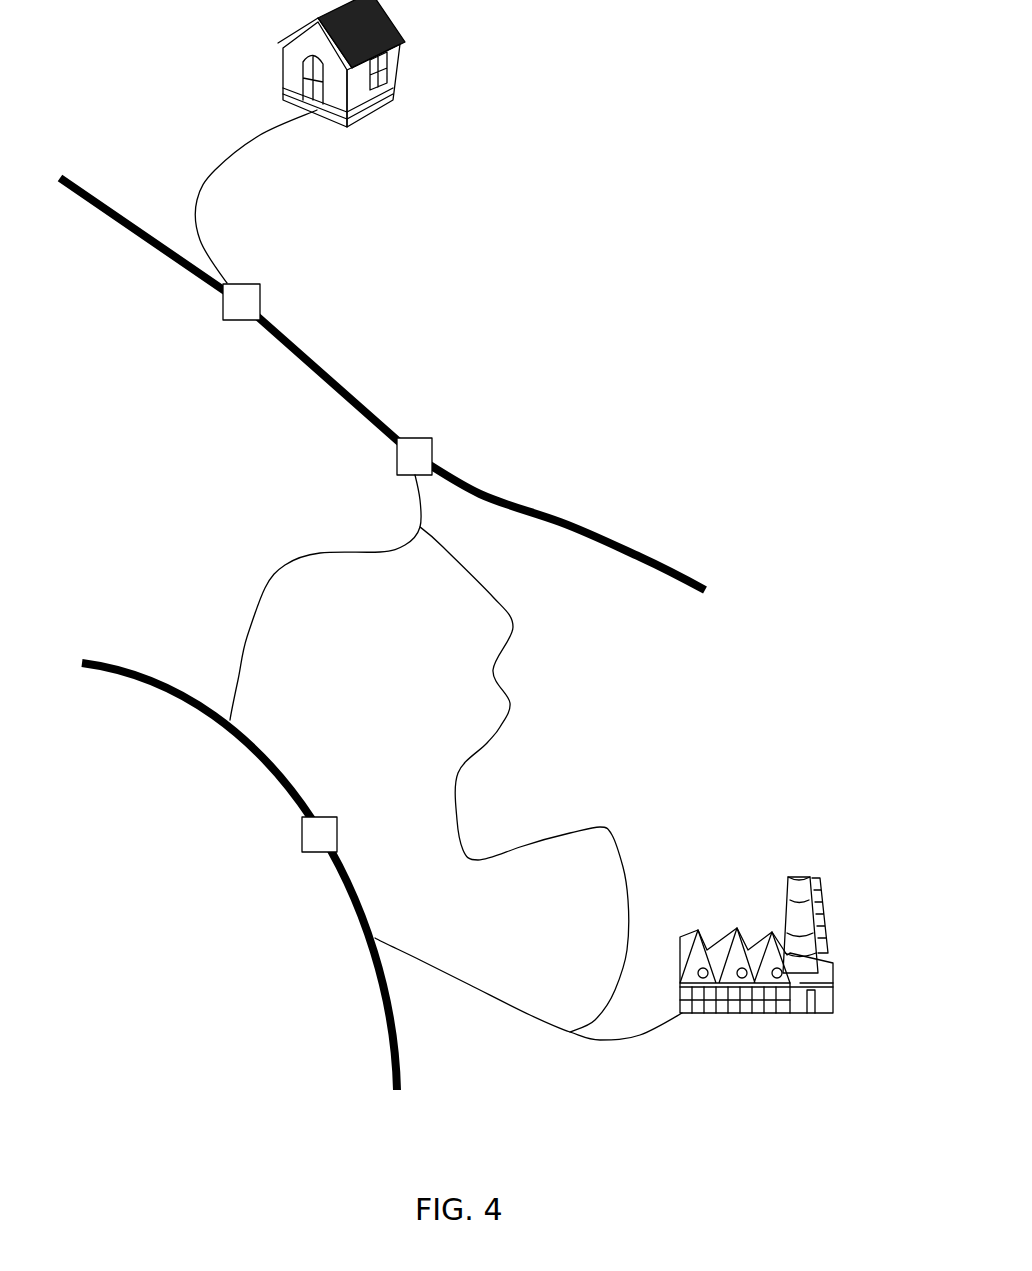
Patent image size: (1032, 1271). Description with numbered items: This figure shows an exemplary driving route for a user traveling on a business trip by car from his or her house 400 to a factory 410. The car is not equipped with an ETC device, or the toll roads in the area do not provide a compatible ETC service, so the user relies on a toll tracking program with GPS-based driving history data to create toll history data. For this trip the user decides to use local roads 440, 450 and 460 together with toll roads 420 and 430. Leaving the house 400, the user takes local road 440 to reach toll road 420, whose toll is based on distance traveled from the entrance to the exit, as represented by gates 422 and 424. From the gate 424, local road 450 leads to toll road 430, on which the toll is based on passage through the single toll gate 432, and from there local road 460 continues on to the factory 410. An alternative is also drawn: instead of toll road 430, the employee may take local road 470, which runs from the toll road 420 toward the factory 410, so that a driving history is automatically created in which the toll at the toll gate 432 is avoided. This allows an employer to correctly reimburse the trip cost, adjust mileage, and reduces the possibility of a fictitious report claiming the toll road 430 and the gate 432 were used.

The house 400 is at (423, 85).
The factory 410 is at (806, 1027).
The toll road 420 is at (655, 545).
The gate 422 is at (214, 332).
The gate 424 is at (450, 443).
The toll road 430 is at (253, 790).
The toll gate 432 is at (279, 858).
The local road 440 is at (270, 163).
The local road 450 is at (296, 594).
The local road 460 is at (543, 999).
The local road 470 is at (620, 823).